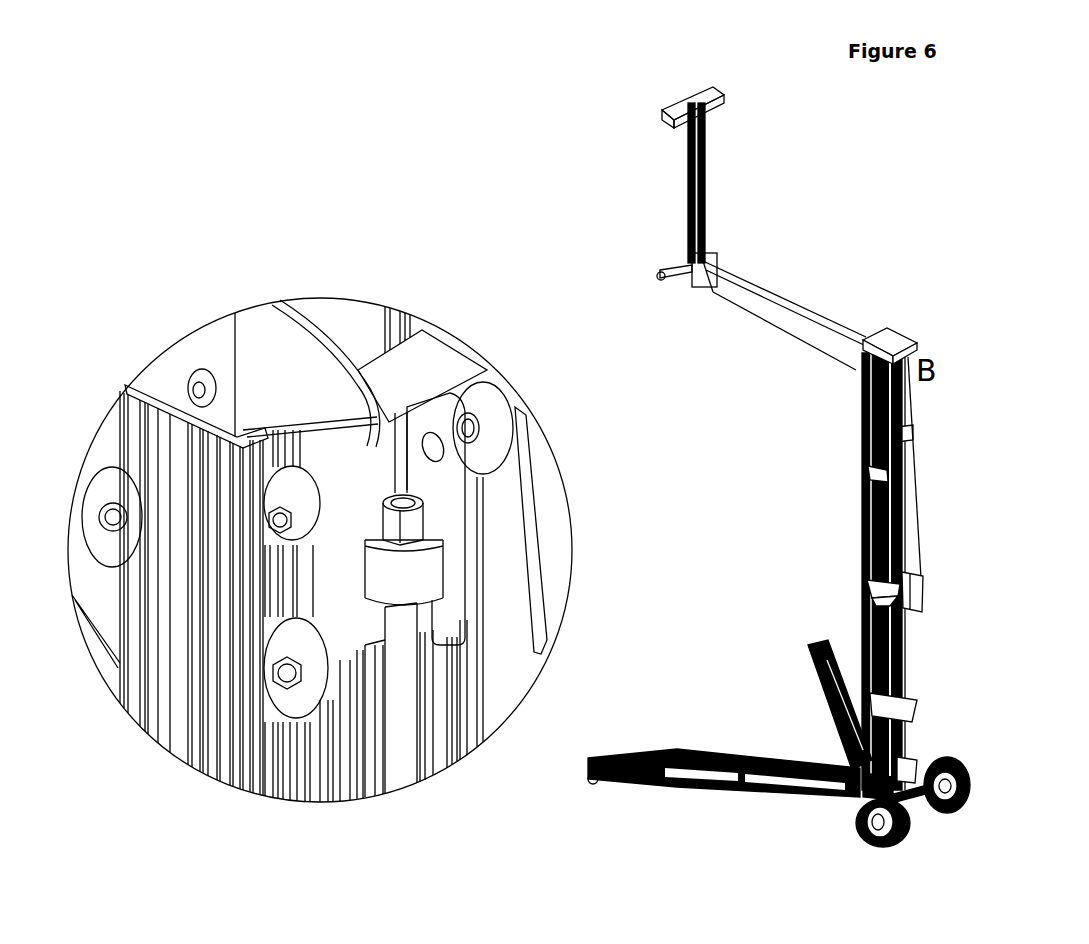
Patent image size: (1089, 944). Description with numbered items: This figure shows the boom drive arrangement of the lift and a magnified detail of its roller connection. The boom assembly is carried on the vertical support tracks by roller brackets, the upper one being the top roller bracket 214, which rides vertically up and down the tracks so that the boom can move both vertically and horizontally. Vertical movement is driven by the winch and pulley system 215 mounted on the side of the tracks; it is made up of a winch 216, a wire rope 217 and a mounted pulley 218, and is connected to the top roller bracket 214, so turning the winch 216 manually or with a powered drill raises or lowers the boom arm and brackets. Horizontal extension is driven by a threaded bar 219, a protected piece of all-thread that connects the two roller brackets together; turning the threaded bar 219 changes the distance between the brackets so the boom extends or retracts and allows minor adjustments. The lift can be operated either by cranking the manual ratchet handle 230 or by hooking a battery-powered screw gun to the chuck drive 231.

The top roller bracket 214 is at (550, 457).
The winch and pulley system 215 is at (957, 558).
The winch 216 is at (926, 586).
The wire rope 217 is at (916, 496).
The mounted pulley 218 is at (905, 332).
The threaded bar 219 is at (422, 678).
The manual ratchet handle 230 is at (863, 577).
The chuck drive 231 is at (863, 571).